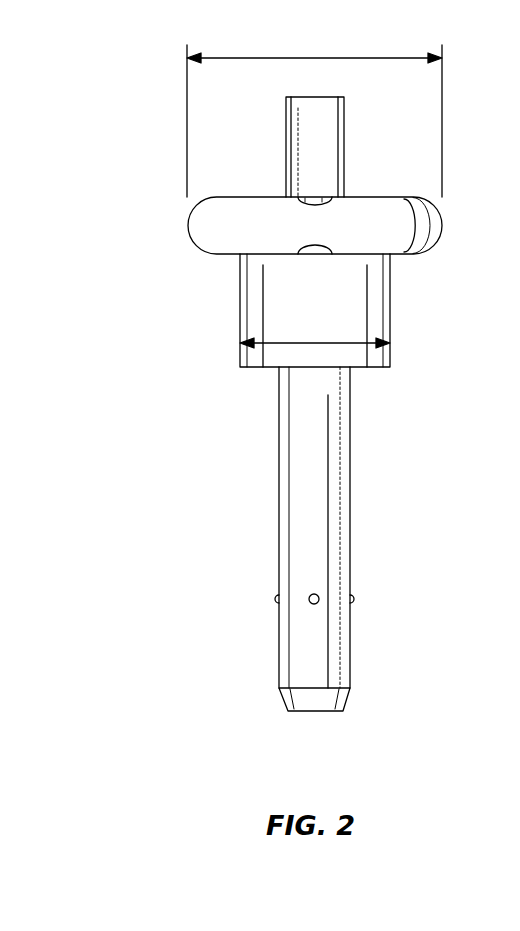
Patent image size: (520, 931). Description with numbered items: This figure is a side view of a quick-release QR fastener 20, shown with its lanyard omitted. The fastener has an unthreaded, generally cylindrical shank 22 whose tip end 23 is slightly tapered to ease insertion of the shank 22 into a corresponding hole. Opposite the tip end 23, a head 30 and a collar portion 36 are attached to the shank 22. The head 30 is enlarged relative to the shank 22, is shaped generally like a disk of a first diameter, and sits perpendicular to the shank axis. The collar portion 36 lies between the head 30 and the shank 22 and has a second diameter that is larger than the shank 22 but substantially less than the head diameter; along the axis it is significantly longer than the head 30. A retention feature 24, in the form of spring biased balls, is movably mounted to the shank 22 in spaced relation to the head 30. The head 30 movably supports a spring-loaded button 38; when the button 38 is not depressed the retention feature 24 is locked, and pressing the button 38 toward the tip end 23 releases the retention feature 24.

The QR fastener 20 is at (197, 445).
The shank 22 is at (328, 522).
The tip end 23 is at (302, 711).
The retention feature 24 is at (355, 600).
The head 30 is at (410, 228).
The collar portion 36 is at (379, 316).
The button 38 is at (313, 96).